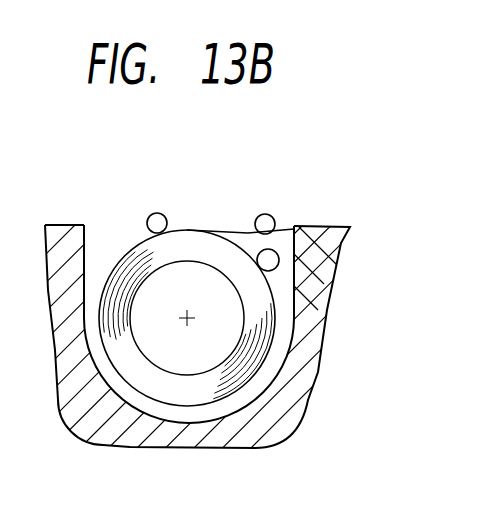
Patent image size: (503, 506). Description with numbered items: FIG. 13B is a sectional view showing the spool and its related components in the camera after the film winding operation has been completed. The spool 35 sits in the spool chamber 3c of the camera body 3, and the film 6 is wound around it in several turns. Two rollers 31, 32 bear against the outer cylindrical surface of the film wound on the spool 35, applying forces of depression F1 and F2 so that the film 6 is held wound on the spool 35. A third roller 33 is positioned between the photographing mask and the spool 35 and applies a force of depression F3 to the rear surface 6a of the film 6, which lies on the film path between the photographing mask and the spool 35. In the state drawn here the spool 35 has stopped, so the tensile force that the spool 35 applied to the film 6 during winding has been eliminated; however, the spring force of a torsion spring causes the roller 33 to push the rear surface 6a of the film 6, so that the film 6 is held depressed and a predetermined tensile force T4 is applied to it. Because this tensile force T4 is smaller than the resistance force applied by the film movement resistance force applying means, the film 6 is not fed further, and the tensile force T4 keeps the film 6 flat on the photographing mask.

The camera body 3 is at (73, 390).
The spool chamber 3c is at (100, 240).
The film 6 is at (183, 392).
The rear surface of the film 6a is at (229, 231).
The roller 31 is at (277, 264).
The roller 32 is at (163, 213).
The roller 33 is at (273, 218).
The spool 35 is at (161, 357).
The force of depression F1 is at (153, 204).
The force of depression F2 is at (285, 240).
The force of depression F3 is at (263, 205).
The tensile force T4 is at (395, 212).